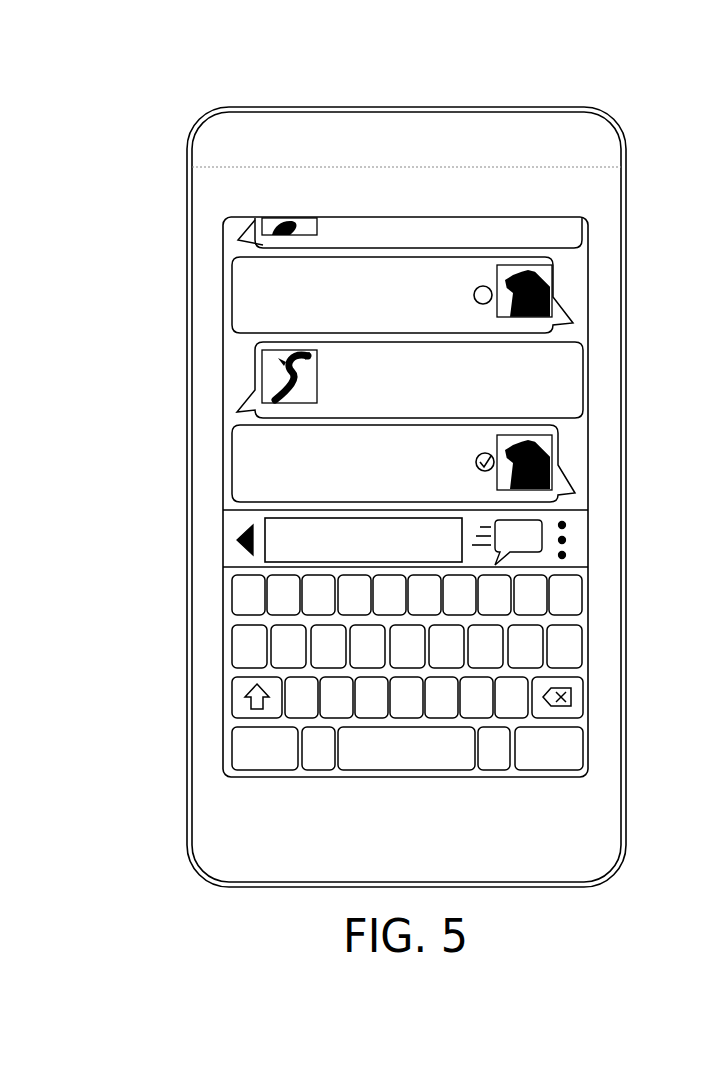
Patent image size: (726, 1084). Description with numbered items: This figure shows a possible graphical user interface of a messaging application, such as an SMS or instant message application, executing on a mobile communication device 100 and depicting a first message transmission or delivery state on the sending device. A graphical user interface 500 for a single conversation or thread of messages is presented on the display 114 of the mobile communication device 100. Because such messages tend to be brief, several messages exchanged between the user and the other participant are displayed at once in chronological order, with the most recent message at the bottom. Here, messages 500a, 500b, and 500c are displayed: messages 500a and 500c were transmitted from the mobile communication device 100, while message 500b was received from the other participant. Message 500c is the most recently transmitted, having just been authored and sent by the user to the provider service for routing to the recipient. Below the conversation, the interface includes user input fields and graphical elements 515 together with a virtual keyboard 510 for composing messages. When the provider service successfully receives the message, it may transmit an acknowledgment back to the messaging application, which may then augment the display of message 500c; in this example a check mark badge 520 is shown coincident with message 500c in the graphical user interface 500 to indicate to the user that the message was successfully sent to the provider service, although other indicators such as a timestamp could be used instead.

The mobile communication device 100 is at (359, 485).
The display 114 is at (420, 410).
The graphical user interface 500 is at (471, 391).
The message 500a is at (333, 282).
The message 500b is at (338, 380).
The message 500c is at (334, 488).
The virtual keyboard 510 is at (343, 672).
The user input fields and graphical elements 515 is at (369, 553).
The check mark badge 520 is at (588, 422).